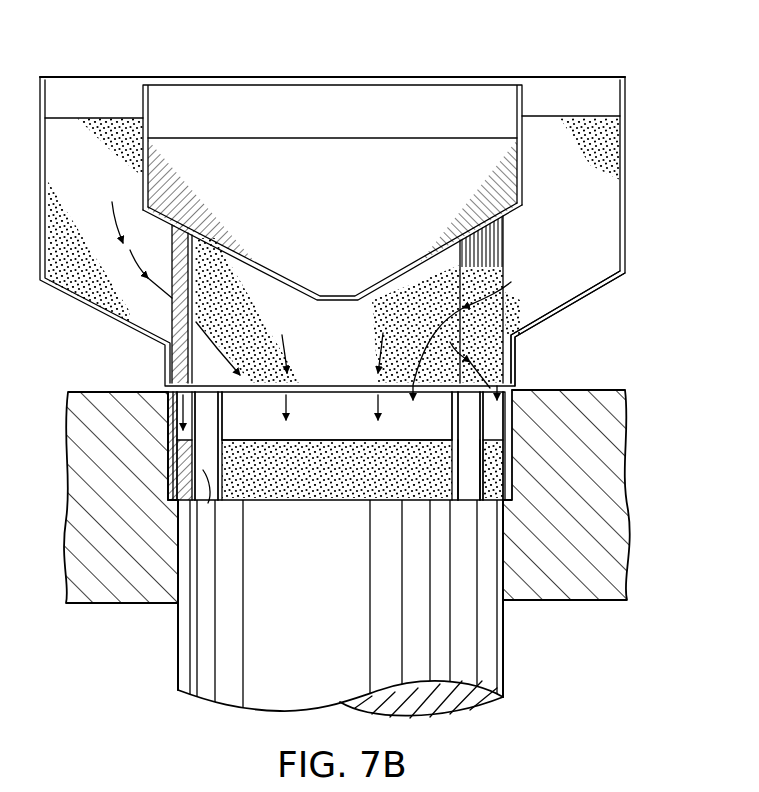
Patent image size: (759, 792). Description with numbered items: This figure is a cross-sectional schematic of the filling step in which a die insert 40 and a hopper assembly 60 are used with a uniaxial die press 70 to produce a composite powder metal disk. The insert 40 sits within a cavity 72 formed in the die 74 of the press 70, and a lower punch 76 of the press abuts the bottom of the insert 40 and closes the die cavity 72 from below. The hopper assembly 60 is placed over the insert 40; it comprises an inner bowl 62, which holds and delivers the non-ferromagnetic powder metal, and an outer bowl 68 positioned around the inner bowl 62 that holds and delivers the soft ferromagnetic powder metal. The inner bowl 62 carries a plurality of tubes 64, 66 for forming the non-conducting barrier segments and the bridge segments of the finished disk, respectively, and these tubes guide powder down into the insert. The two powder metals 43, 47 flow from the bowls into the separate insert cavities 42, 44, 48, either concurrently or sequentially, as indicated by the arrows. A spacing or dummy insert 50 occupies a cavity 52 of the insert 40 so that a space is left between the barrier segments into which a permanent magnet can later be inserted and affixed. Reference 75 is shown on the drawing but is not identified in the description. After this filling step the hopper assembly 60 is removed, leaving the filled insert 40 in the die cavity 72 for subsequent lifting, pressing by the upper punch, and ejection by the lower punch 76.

The die insert 40 is at (166, 453).
The insert cavity 42 is at (347, 424).
The powder metal 43 is at (88, 184).
The insert cavity 44 is at (518, 391).
The powder metal 47 is at (347, 213).
The insert cavity 48 is at (164, 393).
The spacing insert 50 is at (456, 428).
The cavity 52 is at (462, 470).
The hopper assembly 60 is at (637, 76).
The inner bowl 62 is at (366, 100).
The tube 64 is at (462, 250).
The tube 66 is at (174, 262).
The outer bowl 68 is at (628, 217).
The uniaxial die press 70 is at (395, 470).
The die cavity 72 is at (512, 445).
The die 74 is at (372, 496).
The block upper surface 75 is at (577, 390).
The lower punch 76 is at (305, 610).